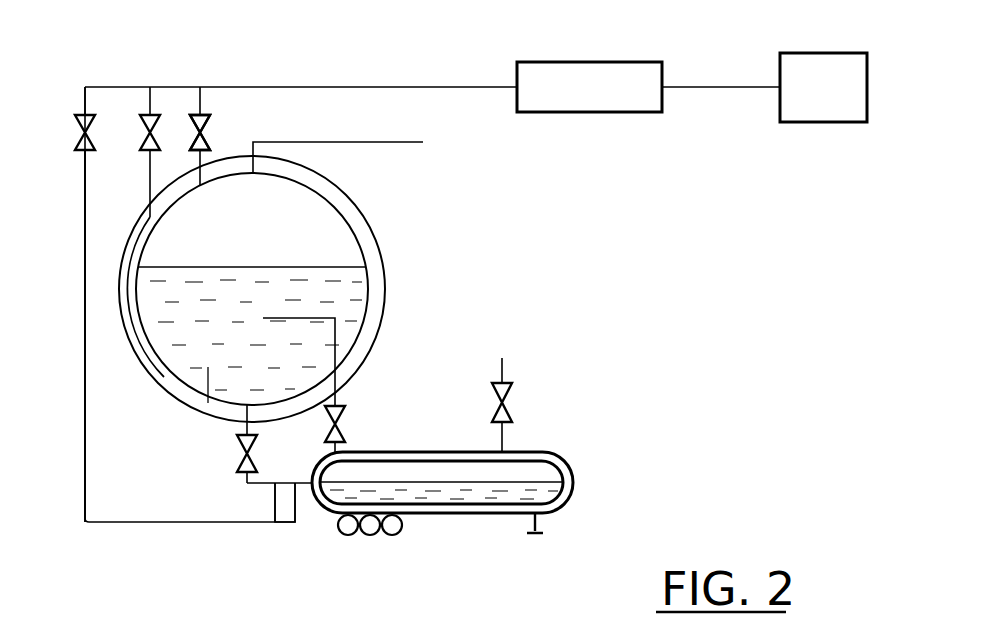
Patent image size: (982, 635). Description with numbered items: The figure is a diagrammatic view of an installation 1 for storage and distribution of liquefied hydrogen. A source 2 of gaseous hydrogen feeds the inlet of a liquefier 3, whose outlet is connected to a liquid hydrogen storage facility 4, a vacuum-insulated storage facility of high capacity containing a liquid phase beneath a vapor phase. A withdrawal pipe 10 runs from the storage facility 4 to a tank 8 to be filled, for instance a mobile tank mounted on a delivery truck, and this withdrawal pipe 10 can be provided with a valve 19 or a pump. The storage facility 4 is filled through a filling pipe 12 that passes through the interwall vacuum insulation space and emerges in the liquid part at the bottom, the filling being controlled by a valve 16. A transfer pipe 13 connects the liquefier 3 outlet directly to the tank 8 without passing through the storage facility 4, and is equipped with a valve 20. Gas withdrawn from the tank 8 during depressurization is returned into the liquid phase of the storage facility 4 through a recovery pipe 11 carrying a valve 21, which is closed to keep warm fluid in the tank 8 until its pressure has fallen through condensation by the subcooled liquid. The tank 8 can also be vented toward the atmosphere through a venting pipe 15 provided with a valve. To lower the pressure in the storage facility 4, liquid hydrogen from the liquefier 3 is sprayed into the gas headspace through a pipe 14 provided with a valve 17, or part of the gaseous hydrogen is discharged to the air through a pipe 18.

The installation 1 is at (624, 329).
The source of gaseous hydrogen 2 is at (800, 88).
The liquefier 3 is at (578, 82).
The liquid hydrogen storage facility 4 is at (384, 279).
The tank 8 is at (569, 466).
The withdrawal pipe 10 is at (275, 497).
The recovery pipe 11 is at (344, 396).
The filling pipe 12 is at (146, 174).
The transfer pipe 13 is at (83, 436).
The pipe 14 is at (203, 98).
The venting pipe 15 is at (509, 364).
The valve 16 is at (161, 127).
The valve 17 is at (214, 129).
The pipe 18 is at (403, 147).
The valve 19 is at (233, 503).
The valve 20 is at (74, 126).
The valve 21 is at (350, 425).